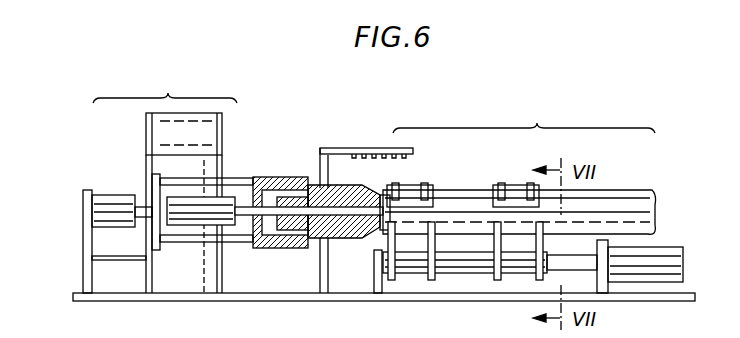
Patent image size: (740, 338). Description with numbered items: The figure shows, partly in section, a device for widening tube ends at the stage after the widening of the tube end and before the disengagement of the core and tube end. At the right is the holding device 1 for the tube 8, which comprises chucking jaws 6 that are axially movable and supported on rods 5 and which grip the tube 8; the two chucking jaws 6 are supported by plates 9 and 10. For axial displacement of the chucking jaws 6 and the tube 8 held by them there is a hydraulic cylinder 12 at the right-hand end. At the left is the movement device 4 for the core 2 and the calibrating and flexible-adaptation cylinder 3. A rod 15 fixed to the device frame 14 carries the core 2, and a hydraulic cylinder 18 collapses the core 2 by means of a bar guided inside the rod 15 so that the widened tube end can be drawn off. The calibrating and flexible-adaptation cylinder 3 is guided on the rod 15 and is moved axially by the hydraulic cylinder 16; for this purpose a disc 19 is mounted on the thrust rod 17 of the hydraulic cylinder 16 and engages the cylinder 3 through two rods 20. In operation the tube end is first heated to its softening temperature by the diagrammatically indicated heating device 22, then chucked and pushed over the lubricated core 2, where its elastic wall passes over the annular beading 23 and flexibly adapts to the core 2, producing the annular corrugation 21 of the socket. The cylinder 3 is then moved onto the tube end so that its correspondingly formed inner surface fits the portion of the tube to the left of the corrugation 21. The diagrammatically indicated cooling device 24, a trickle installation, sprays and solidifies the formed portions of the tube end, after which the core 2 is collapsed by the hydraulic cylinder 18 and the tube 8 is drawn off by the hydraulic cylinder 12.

The holding device 1 is at (524, 114).
The core 2 is at (350, 185).
The calibrating and flexible-adaptation cylinder 3 is at (256, 248).
The movement device 4 is at (165, 85).
The rods 5 is at (460, 276).
The chucking jaws 6 is at (482, 216).
The tube 8 is at (374, 195).
The plates 9 is at (430, 282).
The plates 10 is at (427, 183).
The hydraulic cylinder 12 is at (686, 262).
The device frame 14 is at (252, 296).
The rod 15 is at (240, 204).
The hydraulic cylinder 16 is at (118, 193).
The thrust rod 17 is at (140, 218).
The hydraulic cylinder 18 is at (196, 226).
The disc 19 is at (154, 246).
The rods 20 is at (206, 178).
The annular corrugation 21 is at (300, 180).
The heating device 22 is at (146, 127).
The annular beading 23 is at (290, 248).
The cooling device 24 is at (355, 148).